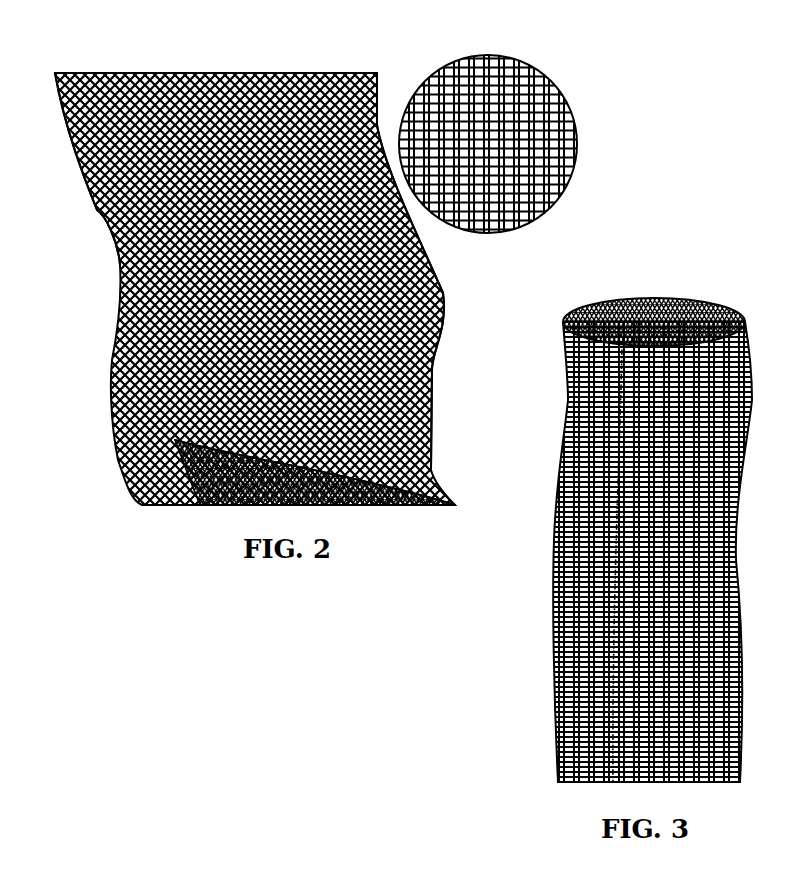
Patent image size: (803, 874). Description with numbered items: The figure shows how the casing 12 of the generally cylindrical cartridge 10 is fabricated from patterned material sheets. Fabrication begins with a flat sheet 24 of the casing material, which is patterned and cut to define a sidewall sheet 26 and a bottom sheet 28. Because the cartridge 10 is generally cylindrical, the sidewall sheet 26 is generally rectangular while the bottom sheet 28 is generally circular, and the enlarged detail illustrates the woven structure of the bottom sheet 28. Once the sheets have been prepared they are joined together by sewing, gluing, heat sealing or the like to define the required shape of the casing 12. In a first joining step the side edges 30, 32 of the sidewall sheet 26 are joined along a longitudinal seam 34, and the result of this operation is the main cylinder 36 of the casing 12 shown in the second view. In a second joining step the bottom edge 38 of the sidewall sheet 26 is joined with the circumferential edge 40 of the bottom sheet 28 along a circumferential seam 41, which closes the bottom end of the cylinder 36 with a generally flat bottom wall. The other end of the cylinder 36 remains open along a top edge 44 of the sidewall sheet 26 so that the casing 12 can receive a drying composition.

In FIG. 3, the cartridge 10 is at (604, 504).
In FIG. 3, the casing 12 is at (558, 712).
In FIG. 2, the flat sheet 24 is at (120, 298).
In FIG. 2, the sidewall sheet 26 is at (256, 92).
In FIG. 2, the bottom sheet 28 is at (543, 88).
In FIG. 2, the side edge 30 is at (158, 73).
In FIG. 2, the side edge 32 is at (441, 478).
In FIG. 3, the longitudinal seam 34 is at (616, 782).
In FIG. 3, the main cylinder 36 is at (555, 618).
In FIG. 2, the bottom edge 38 is at (445, 289).
In FIG. 2, the circumferential edge 40 is at (573, 140).
In FIG. 3, the circumferential seam 41 is at (590, 783).
In FIG. 2, the top edge 44 is at (91, 199).
In FIG. 3, the top edge 44 is at (617, 300).